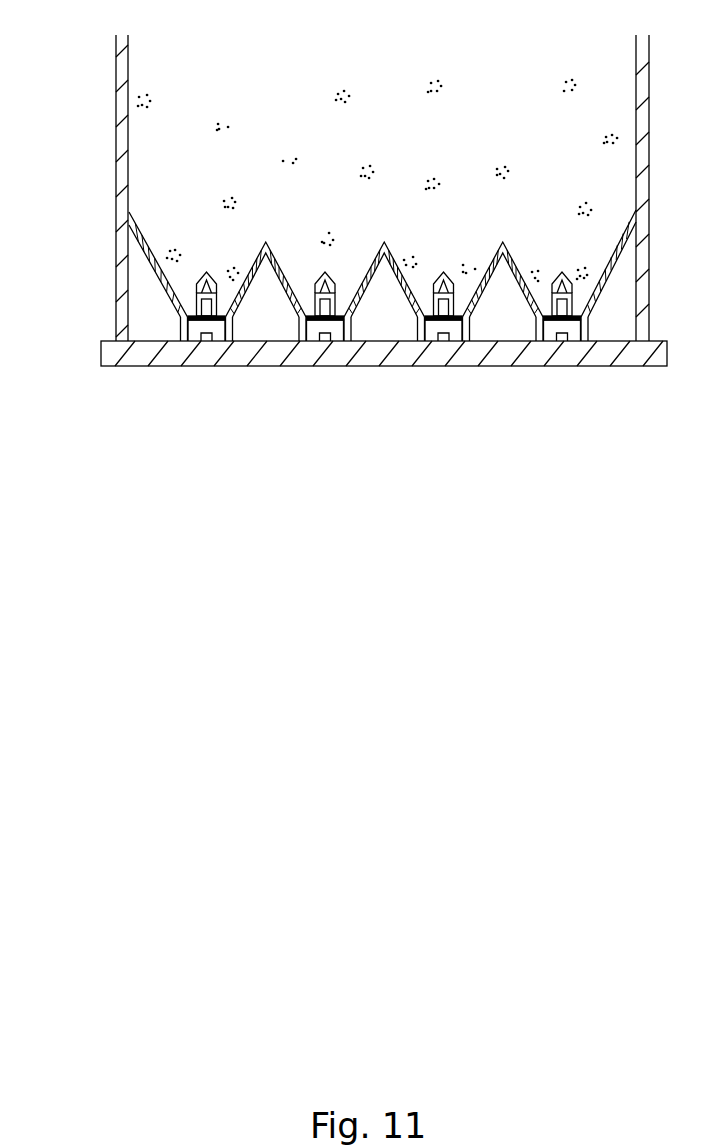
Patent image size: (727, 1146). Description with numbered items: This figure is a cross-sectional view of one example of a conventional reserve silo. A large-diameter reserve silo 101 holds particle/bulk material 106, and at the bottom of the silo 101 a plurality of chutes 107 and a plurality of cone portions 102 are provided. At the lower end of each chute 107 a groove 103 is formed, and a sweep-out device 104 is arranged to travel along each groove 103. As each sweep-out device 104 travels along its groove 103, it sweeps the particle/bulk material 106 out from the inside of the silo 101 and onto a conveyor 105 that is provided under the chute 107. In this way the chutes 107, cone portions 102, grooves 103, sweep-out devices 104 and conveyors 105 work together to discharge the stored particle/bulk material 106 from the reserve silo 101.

The reserve silo 101 is at (120, 92).
The cone portion 102 is at (318, 277).
The groove 103 is at (311, 338).
The sweep-out device 104 is at (336, 305).
The conveyor 105 is at (323, 338).
The particle/bulk material 106 is at (418, 270).
The chute 107 is at (248, 252).